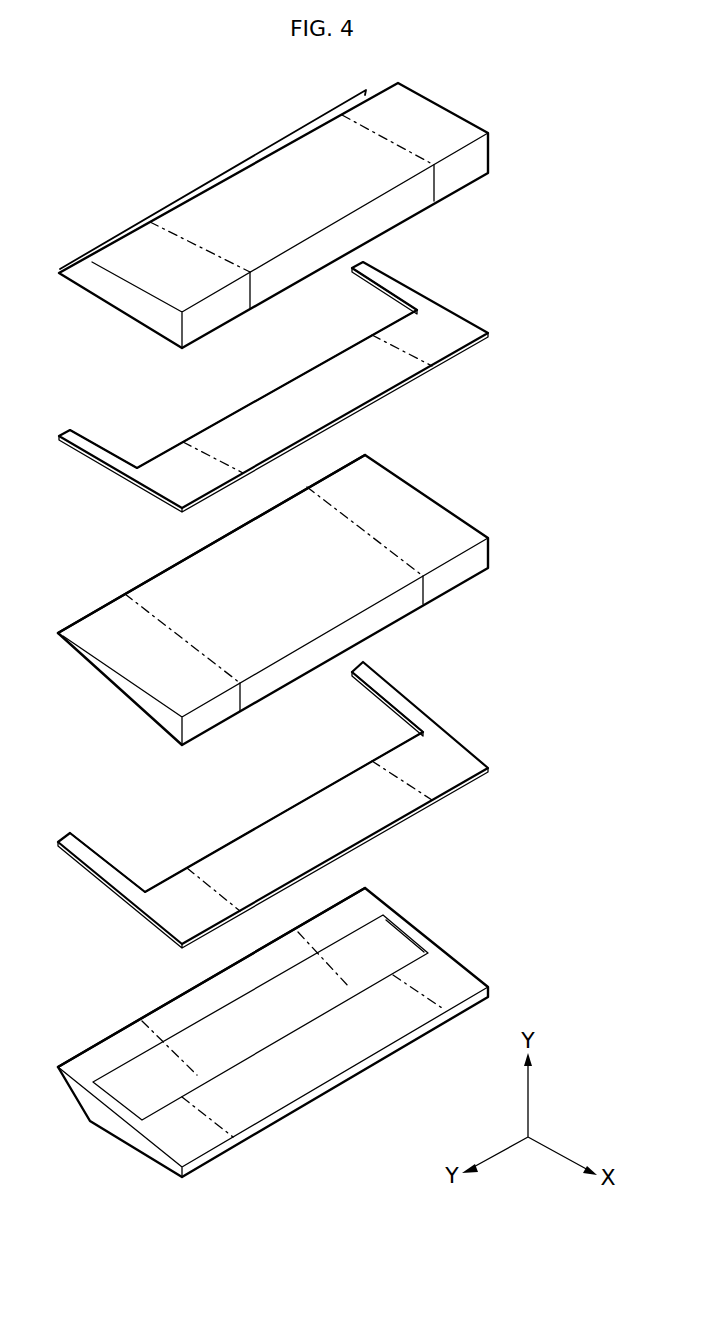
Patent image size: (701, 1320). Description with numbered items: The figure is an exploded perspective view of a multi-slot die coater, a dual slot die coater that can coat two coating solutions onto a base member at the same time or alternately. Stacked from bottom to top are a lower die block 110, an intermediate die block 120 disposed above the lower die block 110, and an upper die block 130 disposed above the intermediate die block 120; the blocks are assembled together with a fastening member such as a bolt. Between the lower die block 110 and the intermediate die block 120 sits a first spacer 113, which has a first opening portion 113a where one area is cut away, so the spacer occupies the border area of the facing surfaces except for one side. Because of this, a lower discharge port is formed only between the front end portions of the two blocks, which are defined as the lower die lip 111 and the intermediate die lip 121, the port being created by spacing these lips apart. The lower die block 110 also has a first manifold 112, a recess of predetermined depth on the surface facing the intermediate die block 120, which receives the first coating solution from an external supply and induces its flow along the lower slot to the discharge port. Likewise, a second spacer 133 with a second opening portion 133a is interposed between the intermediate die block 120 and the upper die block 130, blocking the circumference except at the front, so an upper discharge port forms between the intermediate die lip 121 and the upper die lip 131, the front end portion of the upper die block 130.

The lower die block 110 is at (311, 1025).
The lower die lip 111 is at (122, 1037).
The first manifold 112 is at (385, 954).
The first spacer 113 is at (267, 805).
The first opening portion 113a is at (168, 819).
The intermediate die block 120 is at (311, 600).
The intermediate die lip 121 is at (141, 585).
The upper die block 130 is at (311, 215).
The upper die lip 131 is at (113, 237).
The second spacer 133 is at (266, 387).
The second opening portion 133a is at (158, 406).